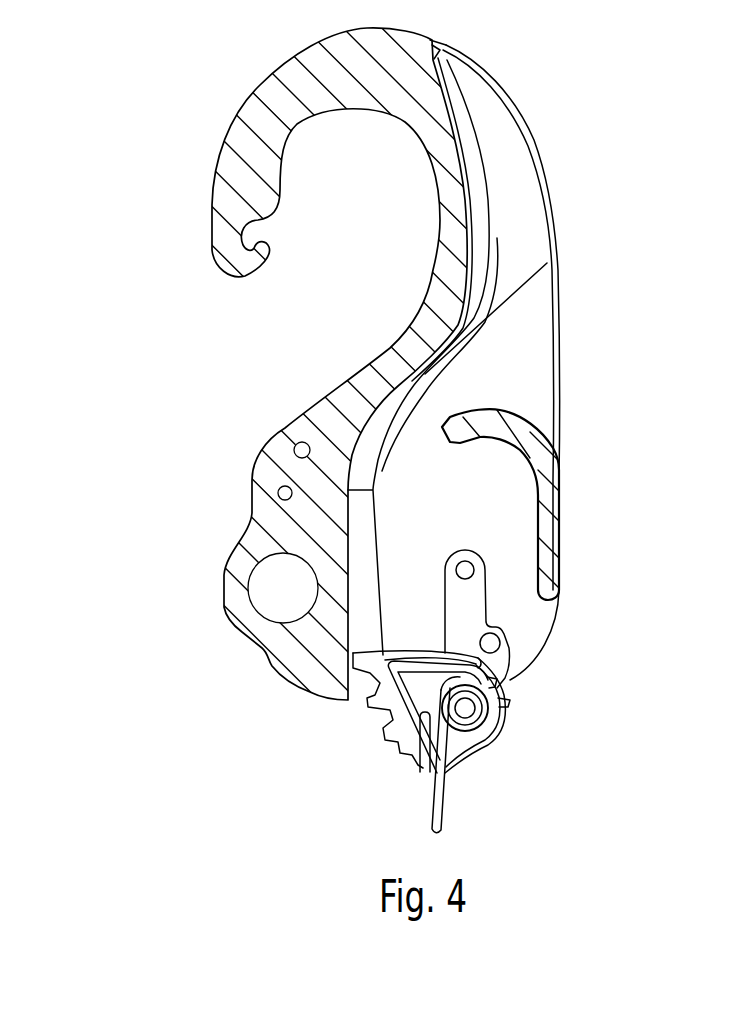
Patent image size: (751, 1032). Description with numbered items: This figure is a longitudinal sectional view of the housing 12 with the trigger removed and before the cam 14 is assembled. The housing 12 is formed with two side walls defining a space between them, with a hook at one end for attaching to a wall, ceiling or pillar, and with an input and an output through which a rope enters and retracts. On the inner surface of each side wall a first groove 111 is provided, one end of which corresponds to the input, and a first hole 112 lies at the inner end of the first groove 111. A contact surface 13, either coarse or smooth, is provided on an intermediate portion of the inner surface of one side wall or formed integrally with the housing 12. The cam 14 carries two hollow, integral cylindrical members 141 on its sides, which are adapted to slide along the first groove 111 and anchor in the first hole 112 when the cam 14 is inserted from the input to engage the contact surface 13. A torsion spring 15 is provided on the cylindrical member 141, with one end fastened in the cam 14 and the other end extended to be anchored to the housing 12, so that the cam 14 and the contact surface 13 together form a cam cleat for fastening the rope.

The housing 12 is at (228, 434).
The contact surface 13 is at (336, 537).
The first groove 111 is at (463, 613).
The first hole 112 is at (466, 568).
The cam 14 is at (457, 768).
The cylindrical member 141 is at (481, 711).
The torsion spring 15 is at (433, 800).